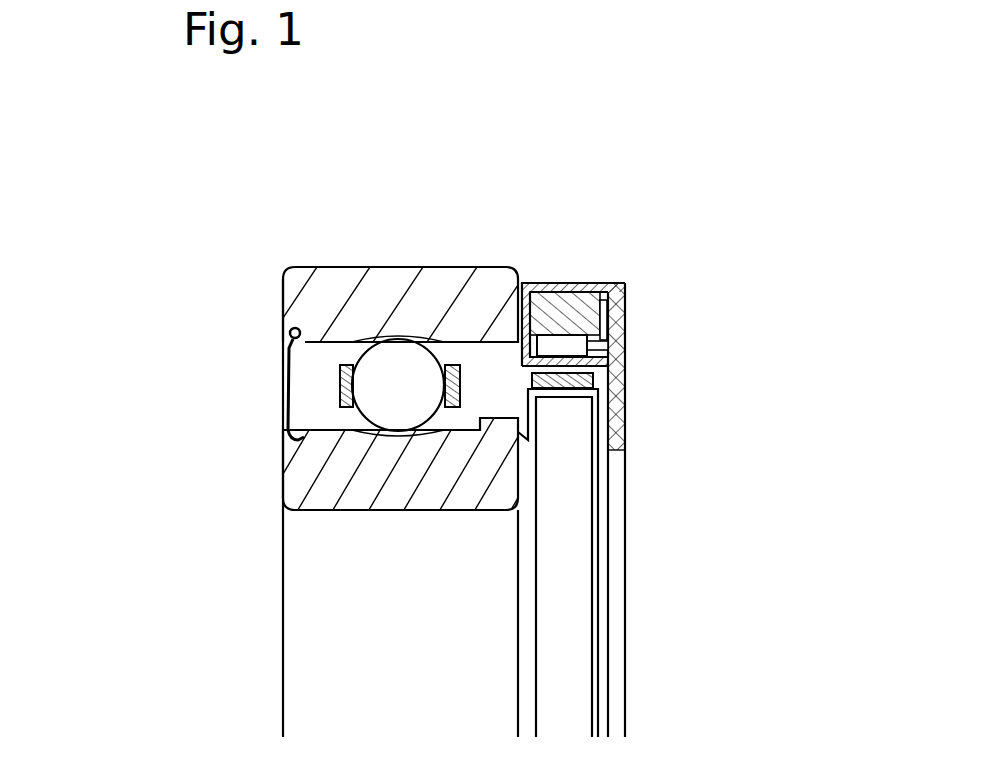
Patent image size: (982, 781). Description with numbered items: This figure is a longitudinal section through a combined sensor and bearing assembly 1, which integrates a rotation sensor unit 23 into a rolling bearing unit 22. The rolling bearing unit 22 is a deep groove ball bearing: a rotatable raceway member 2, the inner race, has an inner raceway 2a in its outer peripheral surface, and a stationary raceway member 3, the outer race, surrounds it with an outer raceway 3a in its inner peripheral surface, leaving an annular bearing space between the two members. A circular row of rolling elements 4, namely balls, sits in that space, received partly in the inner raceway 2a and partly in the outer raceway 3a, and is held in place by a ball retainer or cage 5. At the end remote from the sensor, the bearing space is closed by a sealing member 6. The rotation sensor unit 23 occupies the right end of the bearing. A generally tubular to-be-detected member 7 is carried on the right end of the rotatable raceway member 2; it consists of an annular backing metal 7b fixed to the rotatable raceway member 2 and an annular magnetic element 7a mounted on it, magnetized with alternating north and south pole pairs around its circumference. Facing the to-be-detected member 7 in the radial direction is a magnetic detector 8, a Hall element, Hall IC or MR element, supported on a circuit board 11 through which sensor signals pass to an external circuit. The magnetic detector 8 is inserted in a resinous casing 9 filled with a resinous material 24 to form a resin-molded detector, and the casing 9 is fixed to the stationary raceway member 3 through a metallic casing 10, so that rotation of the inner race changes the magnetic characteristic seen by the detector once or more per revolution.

The combined sensor and bearing assembly 1 is at (142, 236).
The rotatable raceway member 2 is at (290, 488).
The inner raceway 2a is at (305, 446).
The stationary raceway member 3 is at (300, 290).
The outer raceway 3a is at (407, 350).
The rolling elements 4 is at (388, 355).
The ball retainer or cage 5 is at (340, 360).
The sealing member 6 is at (283, 375).
The to-be-detected member 7 is at (785, 453).
The annular magnetic element 7a is at (585, 386).
The annular backing metal 7b is at (557, 400).
The magnetic detector 8 is at (568, 343).
The resinous casing 9 is at (566, 292).
The metallic casing 10 is at (543, 283).
The circuit board 11 is at (625, 322).
The rolling bearing unit 22 is at (287, 252).
The rotation sensor unit 23 is at (840, 305).
The resinous material 24 is at (598, 283).